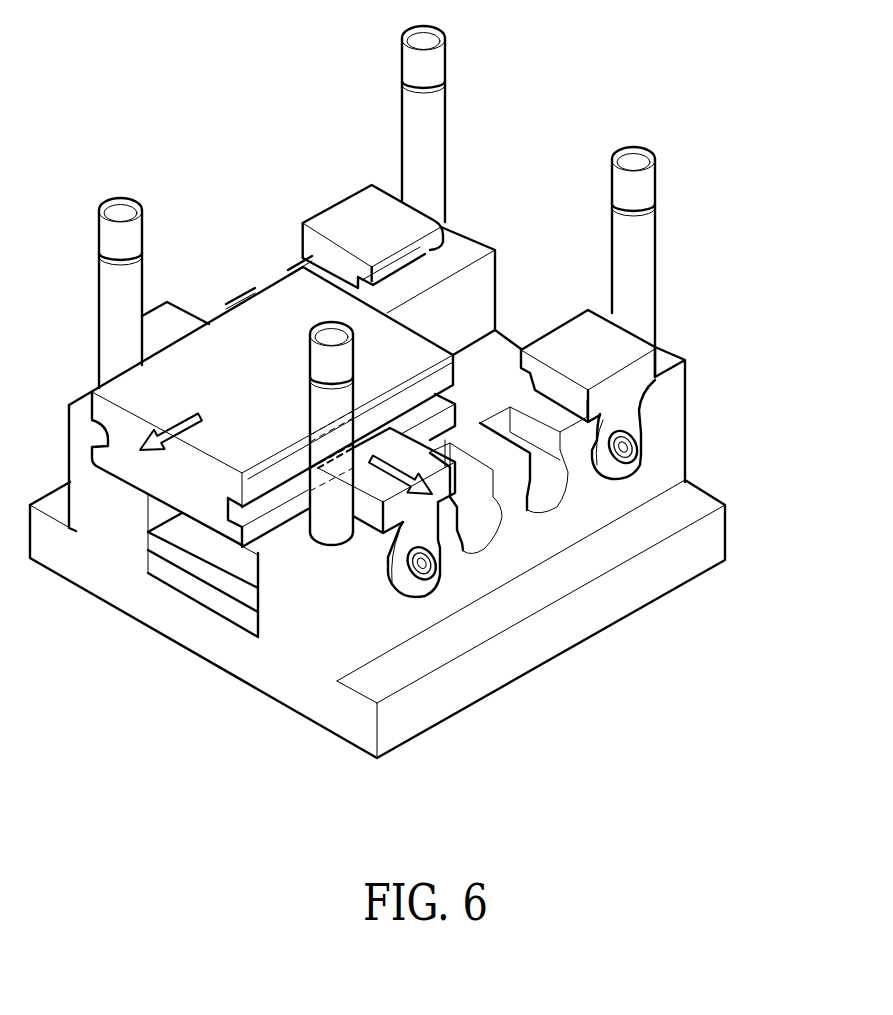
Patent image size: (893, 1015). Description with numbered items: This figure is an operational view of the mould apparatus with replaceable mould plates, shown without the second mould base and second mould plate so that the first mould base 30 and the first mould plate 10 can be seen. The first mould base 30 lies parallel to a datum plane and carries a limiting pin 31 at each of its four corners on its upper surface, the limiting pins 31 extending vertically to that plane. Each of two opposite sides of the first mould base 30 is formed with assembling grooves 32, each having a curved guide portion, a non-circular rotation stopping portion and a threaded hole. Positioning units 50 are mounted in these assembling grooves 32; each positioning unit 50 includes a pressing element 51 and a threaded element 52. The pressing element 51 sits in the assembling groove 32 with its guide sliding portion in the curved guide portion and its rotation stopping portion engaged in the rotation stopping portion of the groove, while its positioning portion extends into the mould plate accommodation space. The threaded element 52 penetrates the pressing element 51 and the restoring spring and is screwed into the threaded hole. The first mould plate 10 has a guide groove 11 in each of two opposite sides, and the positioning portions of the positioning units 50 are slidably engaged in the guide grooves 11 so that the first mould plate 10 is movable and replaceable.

The first mould plate 10 is at (280, 293).
The guide groove 11 is at (240, 516).
The first mould base 30 is at (250, 688).
The limiting pin 31 is at (433, 123).
The assembling groove 32 is at (478, 527).
The positioning unit 50 is at (657, 372).
The pressing element 51 is at (622, 342).
The threaded element 52 is at (664, 414).